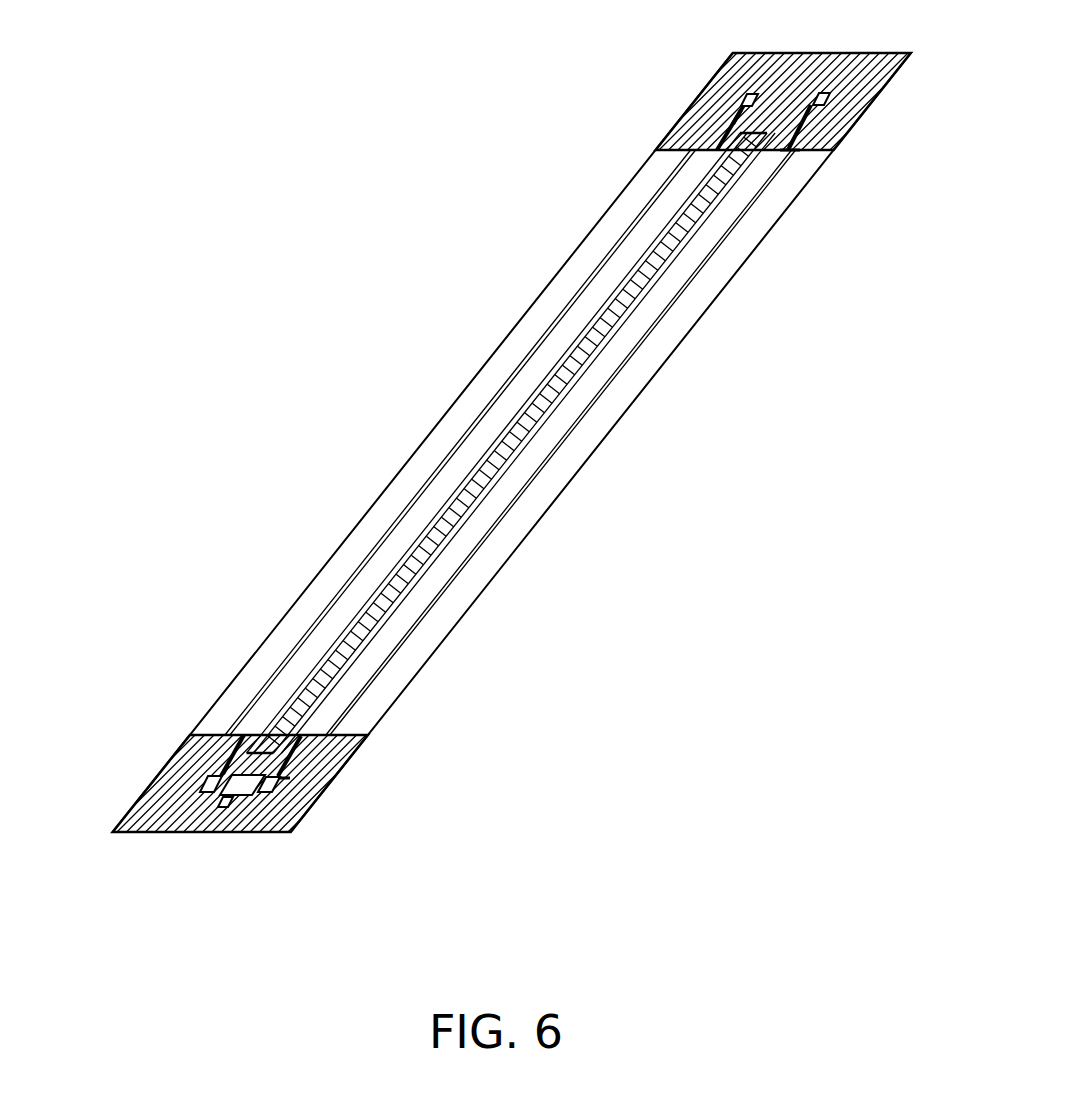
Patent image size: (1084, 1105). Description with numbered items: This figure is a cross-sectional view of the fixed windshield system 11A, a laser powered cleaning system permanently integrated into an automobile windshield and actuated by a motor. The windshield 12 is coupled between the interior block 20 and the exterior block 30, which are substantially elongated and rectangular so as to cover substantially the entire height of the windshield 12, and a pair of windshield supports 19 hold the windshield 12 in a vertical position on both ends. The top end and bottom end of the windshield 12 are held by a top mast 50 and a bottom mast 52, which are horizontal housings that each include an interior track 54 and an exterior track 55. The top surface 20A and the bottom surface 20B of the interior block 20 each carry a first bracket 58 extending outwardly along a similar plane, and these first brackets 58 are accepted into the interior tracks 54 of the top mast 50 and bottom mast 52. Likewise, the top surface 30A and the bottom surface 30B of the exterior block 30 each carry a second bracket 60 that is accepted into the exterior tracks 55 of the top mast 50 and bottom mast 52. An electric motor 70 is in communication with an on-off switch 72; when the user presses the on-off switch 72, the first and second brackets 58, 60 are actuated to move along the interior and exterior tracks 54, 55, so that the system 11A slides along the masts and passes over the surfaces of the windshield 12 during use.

The fixed windshield system 11A is at (741, 647).
The windshield 12 is at (397, 606).
The windshield supports 19 is at (393, 495).
The interior block 20 is at (658, 330).
The top surface of the interior block 20A is at (808, 152).
The bottom surface of the interior block 20B is at (322, 740).
The exterior block 30 is at (532, 350).
The top surface of the exterior block 30A is at (727, 142).
The bottom surface of the exterior block 30B is at (235, 735).
The top mast 50 is at (870, 108).
The bottom mast 52 is at (142, 797).
The interior track 54 is at (827, 92).
The exterior track 55 is at (746, 94).
The first bracket 58 is at (807, 149).
The second bracket 60 is at (735, 116).
The electric motor 70 is at (240, 795).
The on-off switch 72 is at (223, 808).